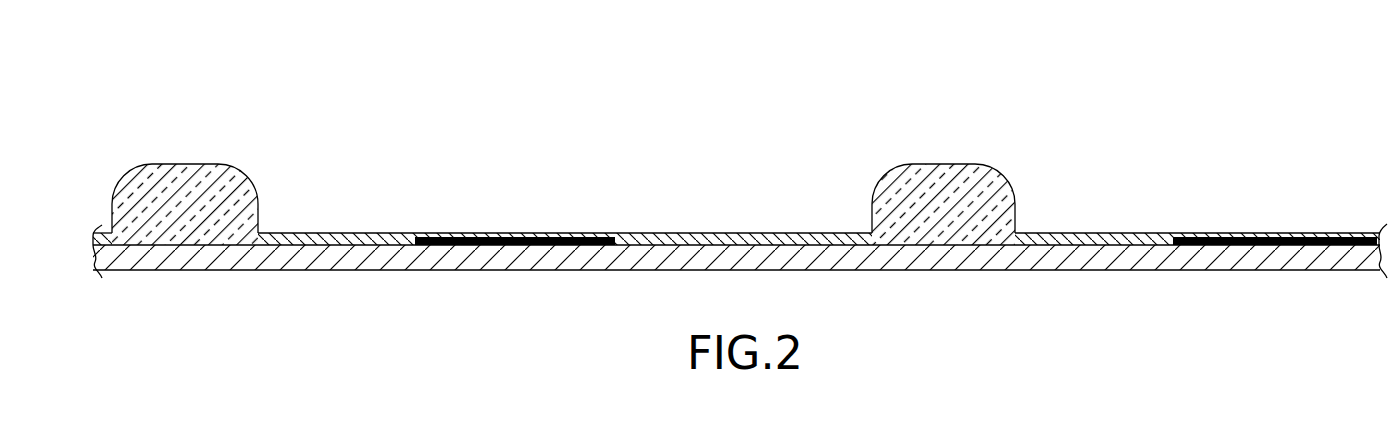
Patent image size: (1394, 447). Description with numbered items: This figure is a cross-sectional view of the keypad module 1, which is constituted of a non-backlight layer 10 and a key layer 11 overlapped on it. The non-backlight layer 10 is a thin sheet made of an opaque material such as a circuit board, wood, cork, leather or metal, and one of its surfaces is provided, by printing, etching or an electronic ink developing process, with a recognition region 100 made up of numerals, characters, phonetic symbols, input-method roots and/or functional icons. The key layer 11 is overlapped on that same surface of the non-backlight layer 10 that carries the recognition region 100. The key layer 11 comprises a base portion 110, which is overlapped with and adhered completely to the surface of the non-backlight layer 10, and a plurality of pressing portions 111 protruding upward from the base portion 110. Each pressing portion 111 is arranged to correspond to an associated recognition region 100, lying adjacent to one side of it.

The keypad module 1 is at (735, 89).
The non-backlight layer 10 is at (327, 263).
The key layer 11 is at (736, 140).
The base portion 110 is at (353, 238).
The pressing portion 111 is at (193, 188).
The recognition region 100 is at (512, 236).